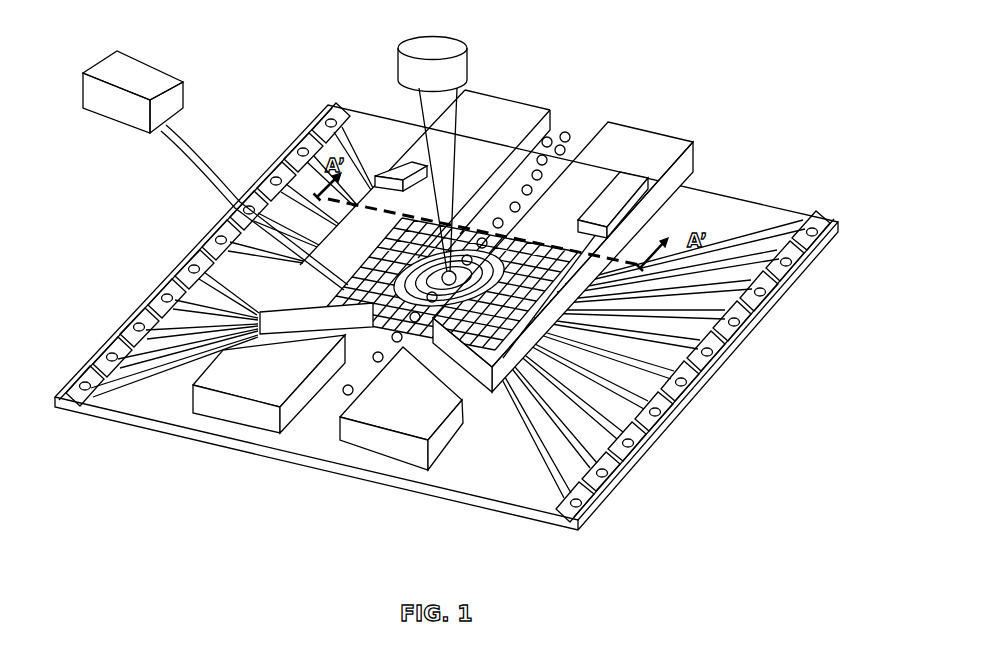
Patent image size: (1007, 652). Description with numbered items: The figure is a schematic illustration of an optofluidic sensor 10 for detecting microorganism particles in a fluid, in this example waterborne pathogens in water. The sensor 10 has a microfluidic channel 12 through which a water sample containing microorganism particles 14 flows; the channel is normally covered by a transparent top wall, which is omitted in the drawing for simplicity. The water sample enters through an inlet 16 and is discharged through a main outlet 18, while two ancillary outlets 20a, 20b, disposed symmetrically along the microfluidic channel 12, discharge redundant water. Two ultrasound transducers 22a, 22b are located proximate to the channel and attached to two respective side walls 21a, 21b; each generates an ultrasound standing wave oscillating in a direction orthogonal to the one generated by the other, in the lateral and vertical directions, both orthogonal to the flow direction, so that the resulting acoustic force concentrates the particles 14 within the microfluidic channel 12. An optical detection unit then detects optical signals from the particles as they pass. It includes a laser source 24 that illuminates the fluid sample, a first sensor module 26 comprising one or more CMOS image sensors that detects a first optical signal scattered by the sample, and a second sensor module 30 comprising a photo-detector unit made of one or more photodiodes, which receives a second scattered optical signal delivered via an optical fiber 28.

The optofluidic sensor 10 is at (792, 108).
The microfluidic channel 12 is at (513, 193).
The microorganism particles 14 is at (378, 362).
The inlet 16 is at (573, 145).
The main outlet 18 is at (307, 428).
The ancillary outlet 20a is at (267, 347).
The ancillary outlet 20b is at (472, 400).
The side wall 21a is at (468, 156).
The side wall 21b is at (650, 153).
The ultrasound transducer 22a is at (401, 168).
The ultrasound transducer 22b is at (613, 205).
The laser source 24 is at (398, 70).
The first sensor module 26 is at (498, 345).
The optical fiber 28 is at (203, 170).
The second sensor module 30 is at (103, 110).